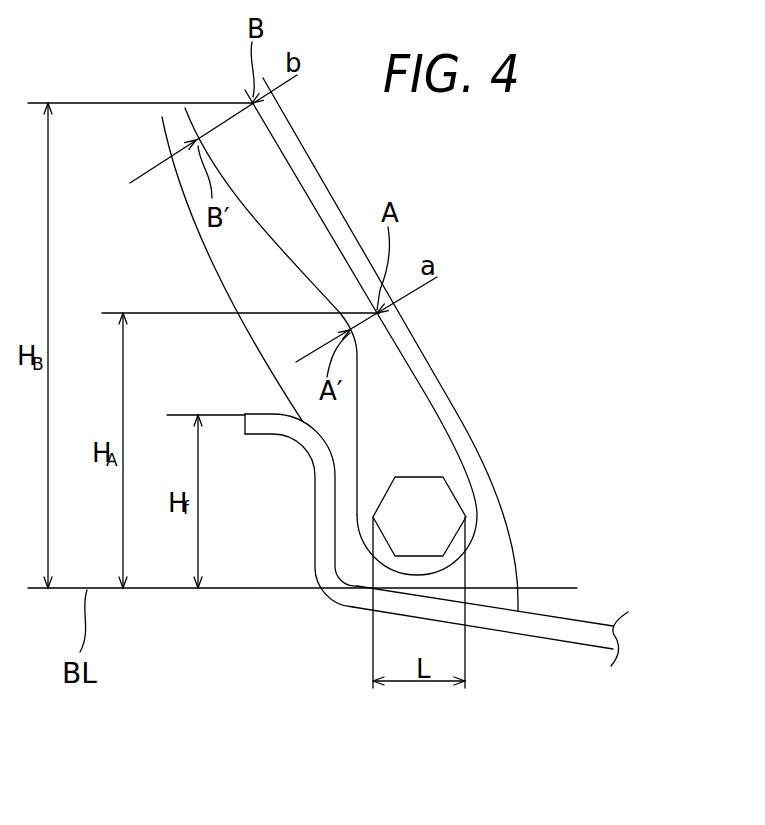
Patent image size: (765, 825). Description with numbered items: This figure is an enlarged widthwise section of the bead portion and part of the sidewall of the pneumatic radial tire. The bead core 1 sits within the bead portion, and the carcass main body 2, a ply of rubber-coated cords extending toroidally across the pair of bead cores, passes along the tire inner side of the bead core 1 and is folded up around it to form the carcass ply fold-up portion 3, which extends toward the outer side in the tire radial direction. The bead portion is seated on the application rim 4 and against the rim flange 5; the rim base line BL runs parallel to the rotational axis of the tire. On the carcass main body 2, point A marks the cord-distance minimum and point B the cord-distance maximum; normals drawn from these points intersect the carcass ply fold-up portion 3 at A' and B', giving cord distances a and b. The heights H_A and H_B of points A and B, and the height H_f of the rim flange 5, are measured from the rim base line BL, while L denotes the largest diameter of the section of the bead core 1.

The bead core 1 is at (428, 505).
The carcass main body 2 is at (447, 410).
The carcass ply fold-up portion 3 is at (253, 213).
The application rim 4 is at (489, 640).
The rim flange 5 is at (322, 503).